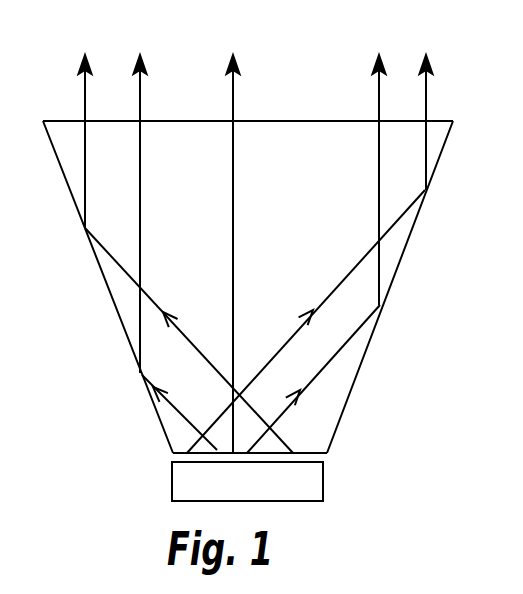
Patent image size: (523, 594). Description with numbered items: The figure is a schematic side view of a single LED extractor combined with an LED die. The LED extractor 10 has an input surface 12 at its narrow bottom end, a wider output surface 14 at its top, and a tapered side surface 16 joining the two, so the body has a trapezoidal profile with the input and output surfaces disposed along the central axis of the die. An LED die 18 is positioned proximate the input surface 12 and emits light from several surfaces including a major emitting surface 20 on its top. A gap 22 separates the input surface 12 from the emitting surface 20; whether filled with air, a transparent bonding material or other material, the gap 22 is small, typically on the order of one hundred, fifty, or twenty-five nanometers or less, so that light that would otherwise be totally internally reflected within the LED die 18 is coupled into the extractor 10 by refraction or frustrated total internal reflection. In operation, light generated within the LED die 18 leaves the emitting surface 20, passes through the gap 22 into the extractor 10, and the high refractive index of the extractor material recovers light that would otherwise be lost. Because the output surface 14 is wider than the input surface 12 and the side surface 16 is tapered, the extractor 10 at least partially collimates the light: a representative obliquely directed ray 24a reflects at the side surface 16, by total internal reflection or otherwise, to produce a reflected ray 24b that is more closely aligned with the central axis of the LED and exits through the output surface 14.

The LED extractor 10 is at (262, 272).
The input surface 12 is at (176, 453).
The output surface 14 is at (300, 120).
The side surface 16 is at (410, 230).
The LED die 18 is at (332, 486).
The major emitting surface 20 is at (296, 462).
The gap 22 is at (322, 453).
The obliquely directed ray 24a is at (152, 393).
The reflected ray 24b is at (142, 141).